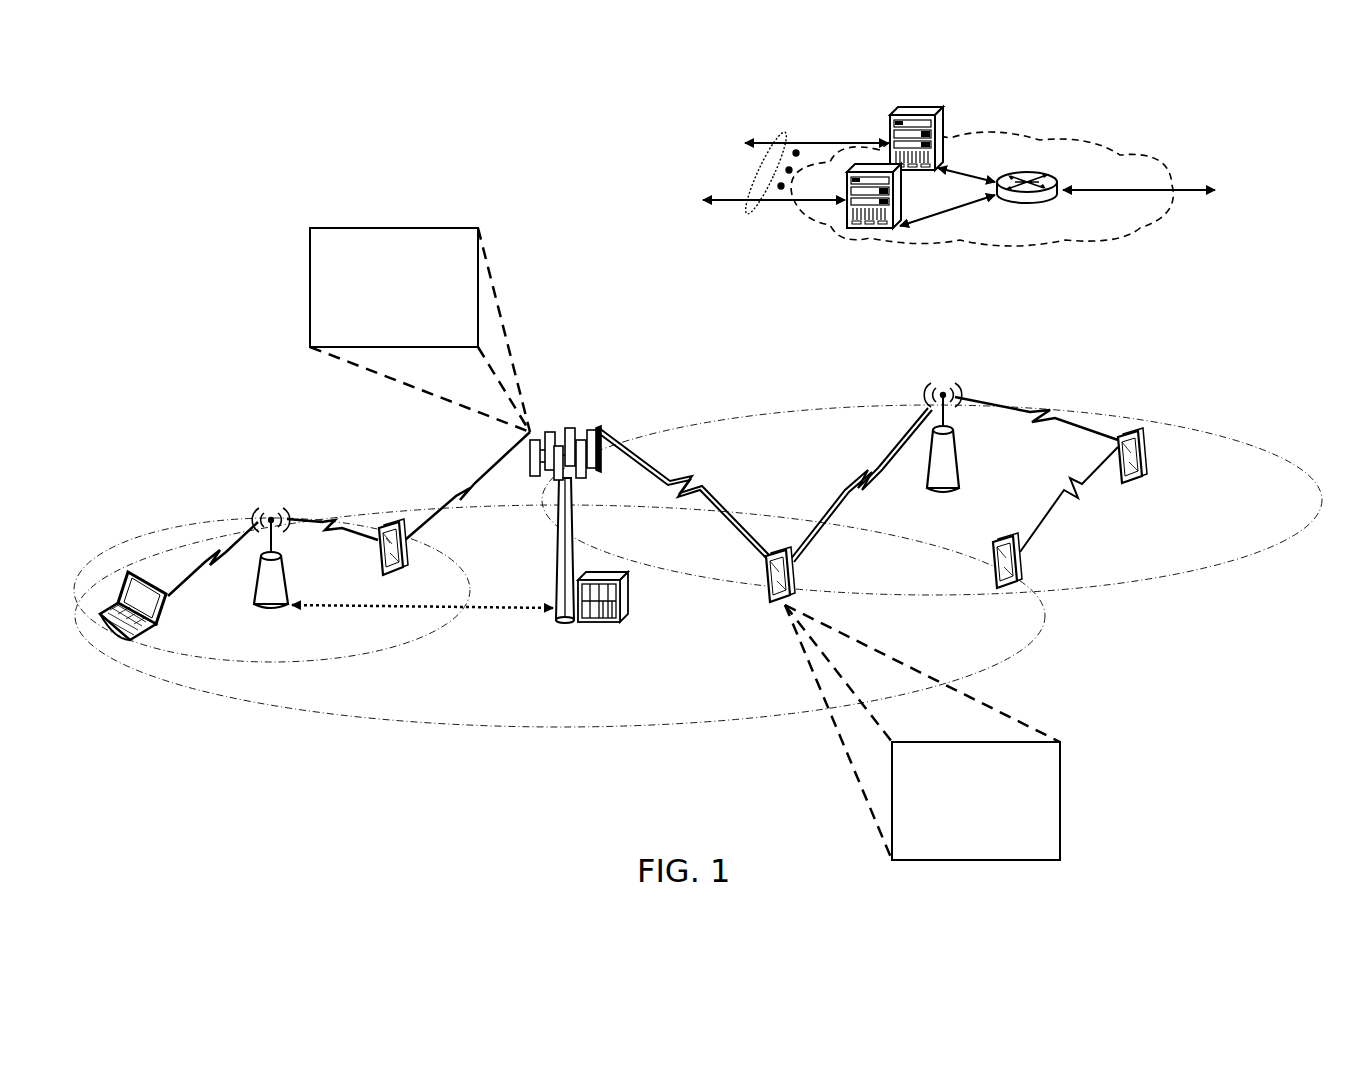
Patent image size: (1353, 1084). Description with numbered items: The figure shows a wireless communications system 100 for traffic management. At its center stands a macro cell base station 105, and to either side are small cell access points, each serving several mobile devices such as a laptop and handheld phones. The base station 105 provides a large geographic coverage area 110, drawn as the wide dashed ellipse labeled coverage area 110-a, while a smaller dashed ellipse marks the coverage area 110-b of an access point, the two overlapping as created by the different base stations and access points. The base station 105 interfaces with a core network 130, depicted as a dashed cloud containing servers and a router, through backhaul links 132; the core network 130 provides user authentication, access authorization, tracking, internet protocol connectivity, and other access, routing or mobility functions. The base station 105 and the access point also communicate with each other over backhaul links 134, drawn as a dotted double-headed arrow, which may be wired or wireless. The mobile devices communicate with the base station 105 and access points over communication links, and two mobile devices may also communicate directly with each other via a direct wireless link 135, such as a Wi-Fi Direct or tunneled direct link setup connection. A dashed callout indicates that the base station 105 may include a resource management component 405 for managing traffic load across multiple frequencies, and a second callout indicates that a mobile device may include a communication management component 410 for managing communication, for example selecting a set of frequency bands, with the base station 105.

The wireless communications system 100 is at (1160, 780).
The base station 105 is at (560, 625).
The geographic coverage area 110 is at (290, 666).
The geographic coverage area for base station 110-a is at (545, 730).
The coverage area for AP 110-b is at (1250, 412).
The core network 130 is at (1000, 248).
The backhaul link 132 is at (745, 215).
The backhaul link 134 is at (355, 612).
The direct wireless link 135 is at (1058, 502).
The resource management component 405 is at (394, 287).
The communication management component 410 is at (976, 801).